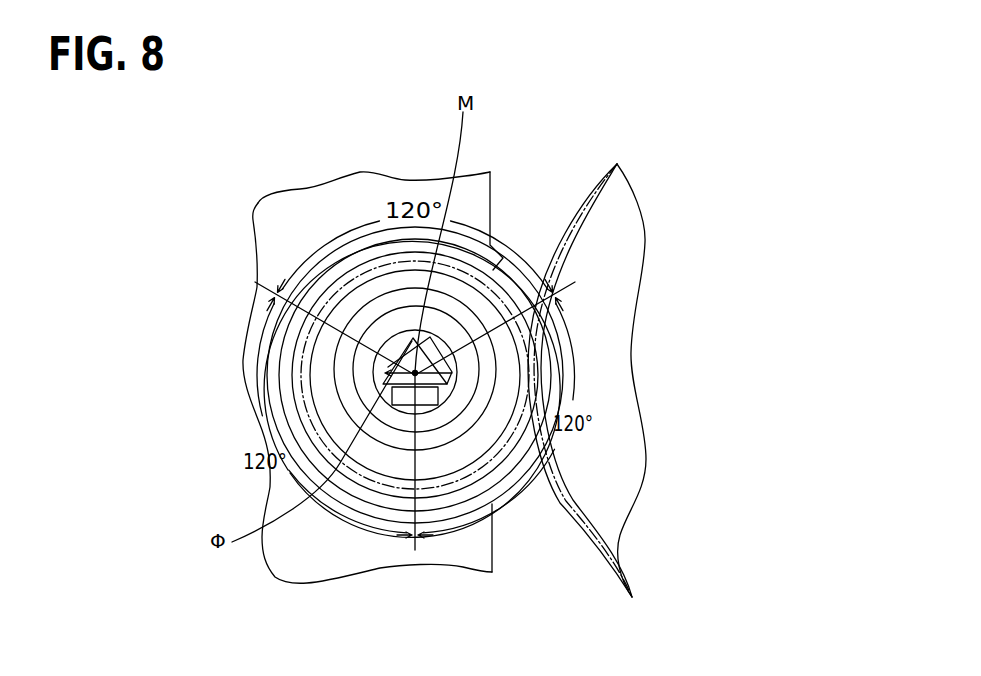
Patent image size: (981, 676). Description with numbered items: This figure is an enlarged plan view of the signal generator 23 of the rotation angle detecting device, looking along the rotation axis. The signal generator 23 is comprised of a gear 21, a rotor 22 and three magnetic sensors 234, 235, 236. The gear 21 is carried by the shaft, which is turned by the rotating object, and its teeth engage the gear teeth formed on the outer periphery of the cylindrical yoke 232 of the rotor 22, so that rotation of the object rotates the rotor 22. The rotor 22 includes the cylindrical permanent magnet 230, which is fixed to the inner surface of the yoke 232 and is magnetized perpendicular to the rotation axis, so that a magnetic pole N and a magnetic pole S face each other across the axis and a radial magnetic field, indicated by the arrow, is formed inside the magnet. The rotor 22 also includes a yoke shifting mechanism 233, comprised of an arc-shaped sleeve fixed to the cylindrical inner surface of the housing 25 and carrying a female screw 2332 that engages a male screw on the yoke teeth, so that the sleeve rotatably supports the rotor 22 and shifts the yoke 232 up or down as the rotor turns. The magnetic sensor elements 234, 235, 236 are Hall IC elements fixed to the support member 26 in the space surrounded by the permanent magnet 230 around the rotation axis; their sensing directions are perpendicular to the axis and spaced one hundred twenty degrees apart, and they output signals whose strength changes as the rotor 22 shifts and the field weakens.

The gear 21 is at (627, 243).
The rotor 22 is at (447, 385).
The signal generator 23 is at (420, 328).
The housing 25 is at (292, 550).
The support member 26 is at (412, 340).
The cylindrical permanent magnet 230 is at (450, 308).
The cylindrical yoke 232 is at (320, 405).
The yoke shifting mechanism 233 is at (268, 372).
The female screw 2332 is at (280, 402).
The magnetic sensor element 234 is at (428, 398).
The magnetic sensor element 235 is at (458, 375).
The magnetic sensor element 236 is at (373, 357).